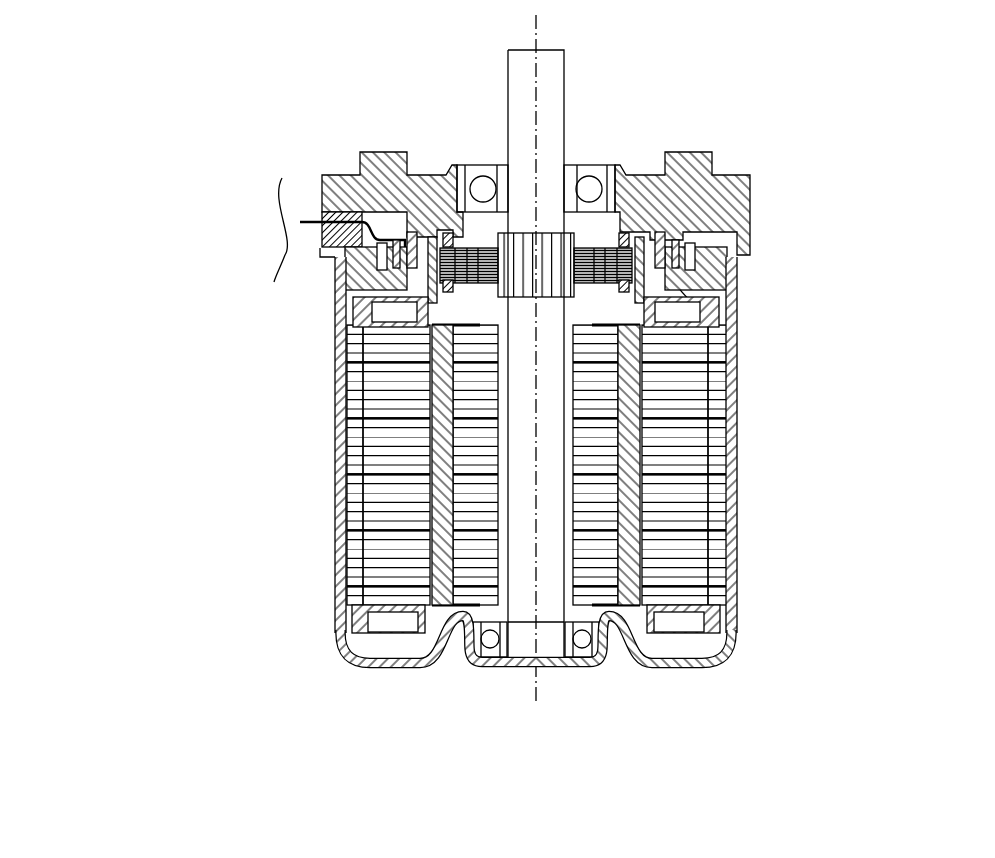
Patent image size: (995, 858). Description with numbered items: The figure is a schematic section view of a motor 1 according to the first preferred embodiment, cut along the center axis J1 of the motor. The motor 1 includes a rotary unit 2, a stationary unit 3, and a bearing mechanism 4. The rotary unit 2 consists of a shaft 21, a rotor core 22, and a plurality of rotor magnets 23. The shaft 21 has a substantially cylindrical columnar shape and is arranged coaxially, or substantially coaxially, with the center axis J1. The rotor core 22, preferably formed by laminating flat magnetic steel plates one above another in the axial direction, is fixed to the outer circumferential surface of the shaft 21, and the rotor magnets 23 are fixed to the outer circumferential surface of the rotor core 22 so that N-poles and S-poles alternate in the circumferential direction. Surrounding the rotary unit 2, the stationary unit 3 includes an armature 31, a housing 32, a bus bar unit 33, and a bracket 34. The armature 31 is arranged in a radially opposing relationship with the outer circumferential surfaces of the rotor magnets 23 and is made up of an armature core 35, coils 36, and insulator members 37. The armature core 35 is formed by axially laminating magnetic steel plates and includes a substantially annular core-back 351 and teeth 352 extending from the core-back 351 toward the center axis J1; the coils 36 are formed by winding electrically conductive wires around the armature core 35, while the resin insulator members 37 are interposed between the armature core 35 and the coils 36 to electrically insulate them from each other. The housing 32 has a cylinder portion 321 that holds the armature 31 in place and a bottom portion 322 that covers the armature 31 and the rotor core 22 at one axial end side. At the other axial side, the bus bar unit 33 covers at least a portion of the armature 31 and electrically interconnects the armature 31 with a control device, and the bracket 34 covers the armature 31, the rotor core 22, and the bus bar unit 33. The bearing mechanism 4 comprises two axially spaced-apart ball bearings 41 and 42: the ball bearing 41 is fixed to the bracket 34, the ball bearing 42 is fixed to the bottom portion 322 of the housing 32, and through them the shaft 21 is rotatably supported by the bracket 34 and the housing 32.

The motor 1 is at (254, 70).
The center axis J1 is at (537, 40).
The rotary unit 2 is at (653, 353).
The shaft 21 is at (557, 418).
The rotor core 22 is at (605, 448).
The rotor magnets 23 is at (630, 474).
The stationary unit 3 is at (390, 405).
The armature 31 is at (436, 268).
The housing 32 is at (483, 473).
The cylinder portion 321 is at (337, 612).
The bottom portion 322 is at (360, 663).
The bus bar unit 33 is at (338, 283).
The bracket 34 is at (366, 176).
The armature core 35 is at (474, 465).
The core-back 351 is at (350, 505).
The teeth 352 is at (366, 534).
The coils 36 is at (348, 290).
The insulator members 37 is at (340, 325).
The bearing mechanism 4 is at (536, 381).
The ball bearing 41 is at (467, 168).
The ball bearing 42 is at (493, 657).